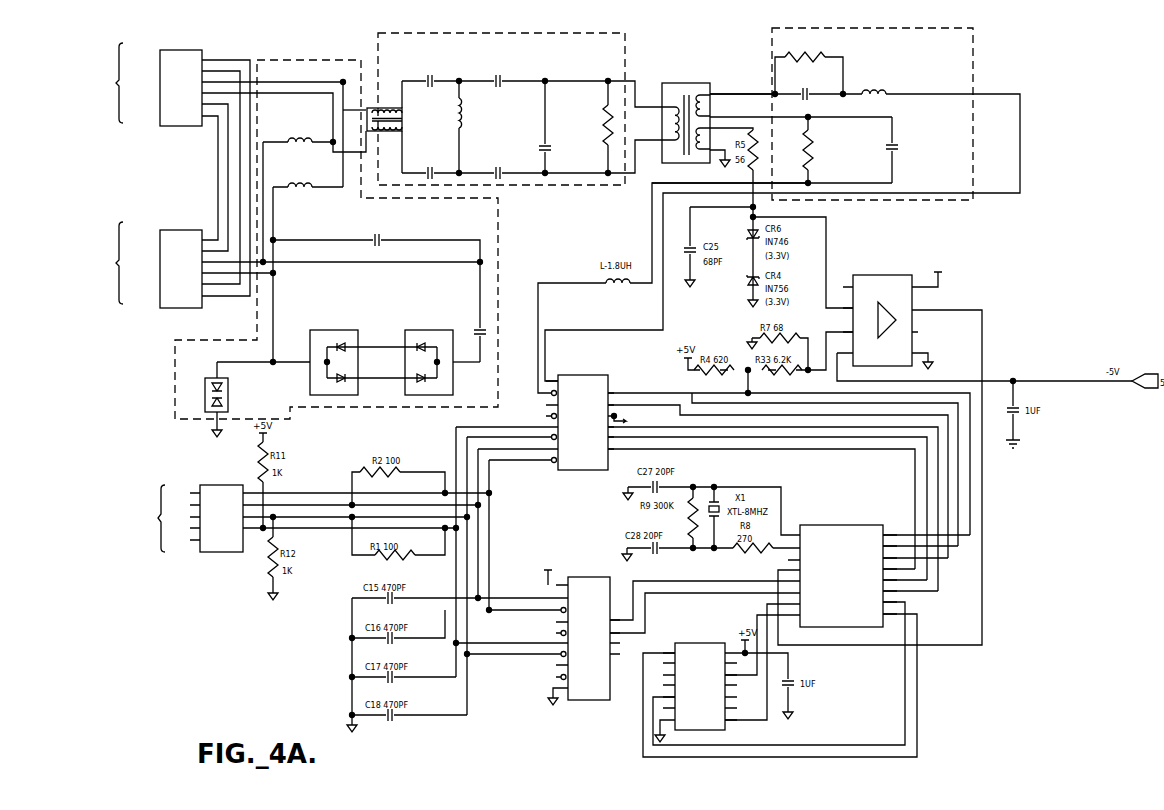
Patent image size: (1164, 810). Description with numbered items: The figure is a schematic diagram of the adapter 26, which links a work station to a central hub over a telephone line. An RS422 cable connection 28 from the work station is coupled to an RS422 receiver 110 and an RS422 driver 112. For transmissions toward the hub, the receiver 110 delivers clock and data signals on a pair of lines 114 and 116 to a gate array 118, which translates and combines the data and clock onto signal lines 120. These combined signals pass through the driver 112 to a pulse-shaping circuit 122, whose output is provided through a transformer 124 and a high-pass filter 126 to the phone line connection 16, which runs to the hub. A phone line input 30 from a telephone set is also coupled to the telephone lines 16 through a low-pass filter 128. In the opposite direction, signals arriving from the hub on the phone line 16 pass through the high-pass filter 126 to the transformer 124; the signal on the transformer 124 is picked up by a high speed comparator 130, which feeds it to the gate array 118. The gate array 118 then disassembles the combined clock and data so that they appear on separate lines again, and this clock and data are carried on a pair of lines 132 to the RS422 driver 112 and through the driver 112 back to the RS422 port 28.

The phone line connection 16 is at (158, 73).
The adapter 26 is at (784, 18).
The RS422 cable connection 28 is at (200, 555).
The phone line input 30 is at (159, 308).
The RS422 receiver 110 is at (572, 708).
The RS422 driver 112 is at (610, 375).
The clock line 114 is at (622, 643).
The data line 116 is at (698, 597).
The gate array 118 is at (808, 518).
The signal lines 120 is at (945, 513).
The pulse-shaping circuit 122 is at (873, 27).
The transformer 124 is at (688, 65).
The high-pass filter 126 is at (570, 32).
The low-pass filter 128 is at (298, 58).
The high speed comparator 130 is at (907, 264).
The pair of lines 132 is at (925, 483).